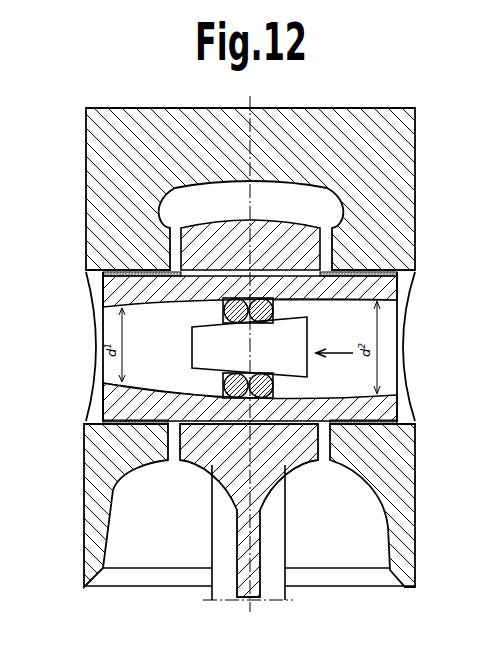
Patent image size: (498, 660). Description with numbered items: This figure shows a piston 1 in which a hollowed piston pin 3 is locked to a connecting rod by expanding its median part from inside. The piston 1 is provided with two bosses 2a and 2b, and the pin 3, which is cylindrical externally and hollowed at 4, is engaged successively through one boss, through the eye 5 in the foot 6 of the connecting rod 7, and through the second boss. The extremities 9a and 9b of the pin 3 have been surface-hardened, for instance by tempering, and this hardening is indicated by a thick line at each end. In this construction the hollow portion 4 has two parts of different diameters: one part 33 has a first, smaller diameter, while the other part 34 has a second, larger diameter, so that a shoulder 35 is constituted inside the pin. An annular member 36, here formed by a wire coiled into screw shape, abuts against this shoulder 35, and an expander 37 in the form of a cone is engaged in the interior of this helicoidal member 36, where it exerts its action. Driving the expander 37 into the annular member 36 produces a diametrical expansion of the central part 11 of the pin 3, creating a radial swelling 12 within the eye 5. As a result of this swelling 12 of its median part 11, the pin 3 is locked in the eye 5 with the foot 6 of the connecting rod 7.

The piston 1 is at (395, 139).
The boss 2a is at (102, 453).
The boss 2b is at (393, 455).
The pin 3 is at (120, 291).
The hollow portion 4 is at (142, 320).
The eye 5 is at (192, 268).
The foot 6 is at (218, 460).
The connecting rod 7 is at (253, 592).
The extremity 9a is at (132, 417).
The extremity 9b is at (365, 420).
The central part 11 is at (260, 278).
The radial expansion 12 is at (288, 471).
The part of smaller diameter 33 is at (152, 380).
The part of larger diameter 34 is at (353, 303).
The shoulder 35 is at (224, 304).
The annular member 36 is at (271, 386).
The expander 37 is at (277, 345).